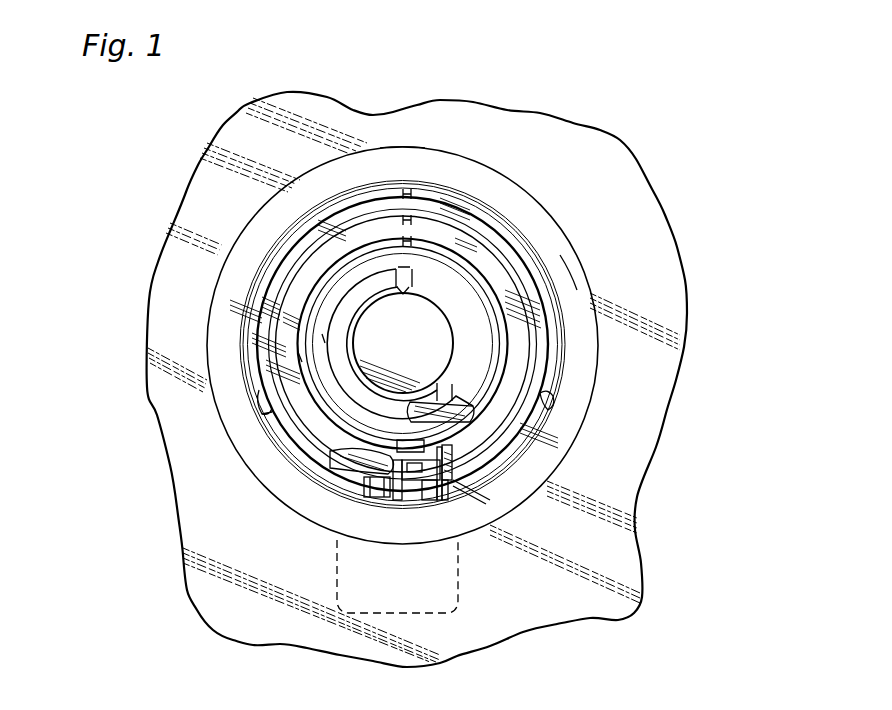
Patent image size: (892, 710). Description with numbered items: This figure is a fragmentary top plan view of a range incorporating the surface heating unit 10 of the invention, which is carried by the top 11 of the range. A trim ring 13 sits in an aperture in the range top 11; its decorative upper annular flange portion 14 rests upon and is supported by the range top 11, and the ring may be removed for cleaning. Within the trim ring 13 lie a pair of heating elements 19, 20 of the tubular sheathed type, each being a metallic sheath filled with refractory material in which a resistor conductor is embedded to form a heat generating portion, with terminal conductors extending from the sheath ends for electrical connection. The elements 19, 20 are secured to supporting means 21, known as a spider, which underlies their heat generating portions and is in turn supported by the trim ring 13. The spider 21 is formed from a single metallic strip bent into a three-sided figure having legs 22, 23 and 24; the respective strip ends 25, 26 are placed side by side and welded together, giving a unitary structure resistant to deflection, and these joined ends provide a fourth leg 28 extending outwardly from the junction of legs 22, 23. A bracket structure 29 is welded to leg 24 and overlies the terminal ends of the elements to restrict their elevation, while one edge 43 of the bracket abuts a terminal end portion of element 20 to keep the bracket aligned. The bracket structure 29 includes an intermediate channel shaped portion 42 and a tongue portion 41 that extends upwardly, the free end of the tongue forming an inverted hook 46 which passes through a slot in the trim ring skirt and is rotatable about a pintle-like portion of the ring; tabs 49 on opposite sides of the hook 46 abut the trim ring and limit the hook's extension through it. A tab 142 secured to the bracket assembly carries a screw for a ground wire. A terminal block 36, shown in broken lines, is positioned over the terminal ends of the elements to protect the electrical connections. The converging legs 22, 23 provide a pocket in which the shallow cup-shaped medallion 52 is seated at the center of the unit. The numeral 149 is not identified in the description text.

The heating unit 10 is at (541, 189).
The range top 11 is at (612, 143).
The trim ring 13 is at (437, 147).
The upper annular flange portion 14 is at (565, 262).
The heating element 19 is at (327, 213).
The heating element 20 is at (300, 267).
The spider 21 is at (550, 399).
The leg 22 is at (528, 384).
The leg 23 is at (280, 377).
The leg 24 is at (510, 450).
The strip end 25 is at (388, 242).
The strip end 26 is at (438, 195).
The fourth leg 28 is at (437, 242).
The bracket structure 29 is at (456, 476).
The terminal block 36 is at (345, 572).
The tongue portion 41 is at (390, 500).
The intermediate channel shaped portion 42 is at (414, 481).
The edge 43 is at (352, 452).
The inverted hook 46 is at (403, 494).
The tabs 49 is at (372, 496).
The medallion 52 is at (390, 345).
The tab 142 is at (434, 522).
The lead 149 is at (440, 512).